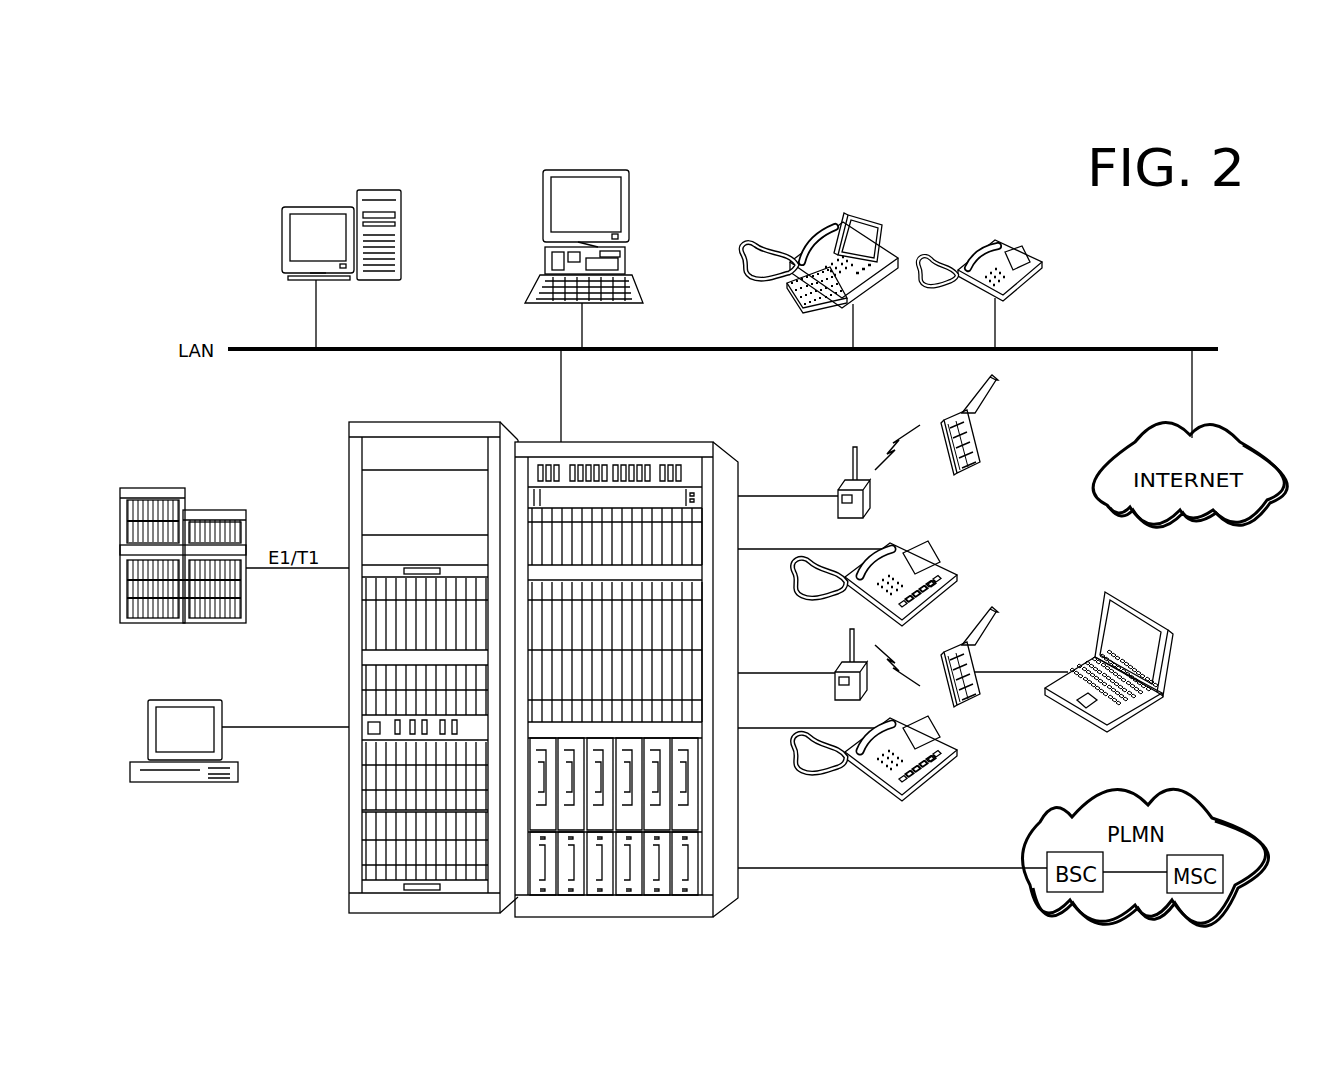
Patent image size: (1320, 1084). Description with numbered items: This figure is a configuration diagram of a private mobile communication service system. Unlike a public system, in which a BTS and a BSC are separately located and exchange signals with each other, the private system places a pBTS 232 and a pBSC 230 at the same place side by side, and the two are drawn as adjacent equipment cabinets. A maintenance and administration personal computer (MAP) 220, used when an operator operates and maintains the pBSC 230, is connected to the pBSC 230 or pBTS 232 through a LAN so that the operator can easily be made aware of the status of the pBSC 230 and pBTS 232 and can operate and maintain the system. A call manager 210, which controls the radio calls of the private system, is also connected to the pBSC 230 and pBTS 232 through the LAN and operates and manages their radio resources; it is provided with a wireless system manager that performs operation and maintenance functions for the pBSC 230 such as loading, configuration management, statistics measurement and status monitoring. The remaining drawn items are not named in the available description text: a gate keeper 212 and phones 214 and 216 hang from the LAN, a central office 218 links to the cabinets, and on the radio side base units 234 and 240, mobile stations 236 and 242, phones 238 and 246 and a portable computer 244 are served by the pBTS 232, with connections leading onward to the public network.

The call manager 210 is at (376, 188).
The gate keeper 212 is at (631, 215).
The web phone 214 is at (849, 212).
The LAN phone 216 is at (998, 240).
The central office (C.O) 218 is at (220, 507).
The maintenance and administration personal computer (MAP) 220 is at (212, 700).
The pBSC 230 is at (437, 420).
The pBTS 232 is at (627, 440).
The base station 234 is at (838, 482).
The mobile station (MS) 236 is at (978, 437).
The digital phone 238 is at (933, 560).
The base station 240 is at (835, 660).
The mobile station (MS) 242 is at (975, 650).
The laptop computer 244 is at (1170, 648).
The digital phone 246 is at (946, 772).